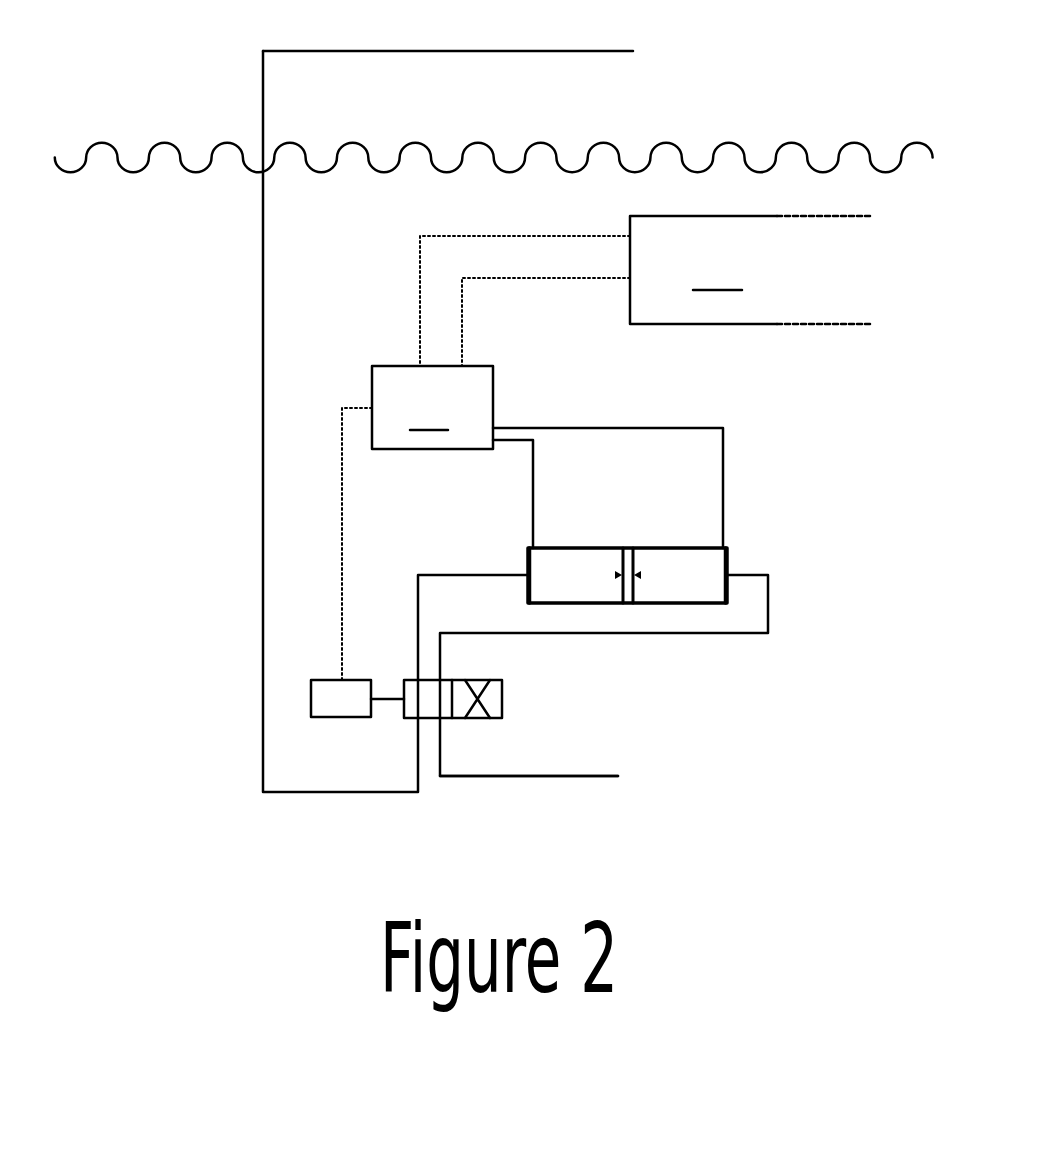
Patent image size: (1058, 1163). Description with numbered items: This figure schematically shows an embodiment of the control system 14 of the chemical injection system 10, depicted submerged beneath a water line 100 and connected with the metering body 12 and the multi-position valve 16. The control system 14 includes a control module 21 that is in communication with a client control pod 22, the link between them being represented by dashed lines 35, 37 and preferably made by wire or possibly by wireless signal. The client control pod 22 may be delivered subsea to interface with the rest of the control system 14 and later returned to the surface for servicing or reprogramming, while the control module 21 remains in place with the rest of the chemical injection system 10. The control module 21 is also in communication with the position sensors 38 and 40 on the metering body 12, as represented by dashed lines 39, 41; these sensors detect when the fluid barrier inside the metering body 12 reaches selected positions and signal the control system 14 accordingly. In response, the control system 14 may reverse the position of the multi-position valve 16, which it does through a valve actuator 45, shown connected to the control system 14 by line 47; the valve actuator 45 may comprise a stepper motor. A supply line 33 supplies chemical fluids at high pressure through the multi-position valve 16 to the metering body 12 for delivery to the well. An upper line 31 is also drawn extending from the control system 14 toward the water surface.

The chemical injection system 10 is at (807, 776).
The metering body 12 is at (595, 548).
The control system 14 is at (345, 272).
The multi-position valve 16 is at (502, 700).
The control module 21 is at (432, 407).
The client control pod 22 is at (751, 270).
The upper tether line 31 is at (582, 51).
The supply line 33 is at (565, 776).
The dashed line 35 is at (507, 236).
The dashed line 37 is at (523, 278).
The position sensor 38 is at (532, 547).
The dashed line 39 is at (533, 482).
The position sensor 40 is at (723, 540).
The dashed line 41 is at (723, 477).
The valve actuator 45 is at (338, 700).
The line 47 is at (342, 545).
The water line 100 is at (747, 150).